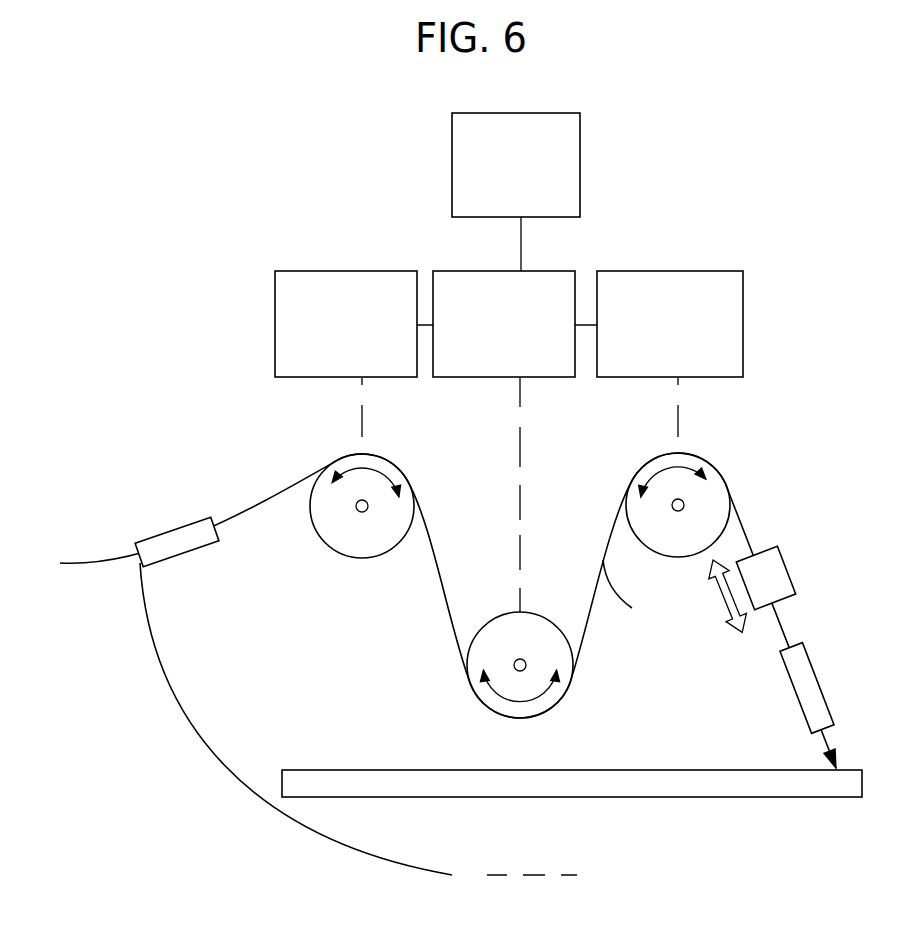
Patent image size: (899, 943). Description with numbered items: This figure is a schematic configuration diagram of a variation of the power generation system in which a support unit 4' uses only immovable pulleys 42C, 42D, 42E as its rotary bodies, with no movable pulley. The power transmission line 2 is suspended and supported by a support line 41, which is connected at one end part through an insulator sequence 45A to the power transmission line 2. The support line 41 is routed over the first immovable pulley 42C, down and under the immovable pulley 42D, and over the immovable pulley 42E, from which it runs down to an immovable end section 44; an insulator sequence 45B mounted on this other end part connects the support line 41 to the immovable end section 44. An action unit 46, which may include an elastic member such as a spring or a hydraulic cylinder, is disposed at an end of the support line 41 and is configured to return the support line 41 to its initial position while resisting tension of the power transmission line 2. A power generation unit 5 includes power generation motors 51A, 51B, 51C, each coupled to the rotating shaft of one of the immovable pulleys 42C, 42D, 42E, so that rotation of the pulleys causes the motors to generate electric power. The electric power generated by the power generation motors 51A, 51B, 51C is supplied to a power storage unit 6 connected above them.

The power transmission line 2 is at (82, 560).
The support unit 4' is at (835, 455).
The power generation unit 5 is at (806, 323).
The power storage unit 6 is at (567, 127).
The support line 41 is at (627, 599).
The immovable pulley 42C is at (397, 477).
The immovable pulley 42D is at (553, 645).
The immovable pulley 42E is at (717, 485).
The immovable end section 44 is at (845, 782).
The insulator sequence 45A is at (188, 533).
The insulator sequence 45B is at (818, 702).
The action unit 46 is at (777, 573).
The power generation motor 51A is at (408, 297).
The power generation motor 51B is at (737, 297).
The power generation motor 51C is at (568, 297).